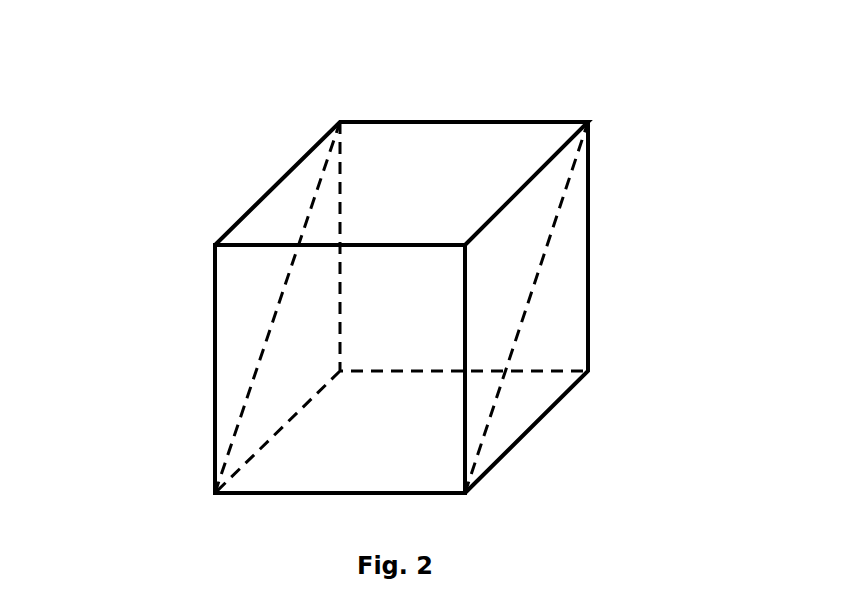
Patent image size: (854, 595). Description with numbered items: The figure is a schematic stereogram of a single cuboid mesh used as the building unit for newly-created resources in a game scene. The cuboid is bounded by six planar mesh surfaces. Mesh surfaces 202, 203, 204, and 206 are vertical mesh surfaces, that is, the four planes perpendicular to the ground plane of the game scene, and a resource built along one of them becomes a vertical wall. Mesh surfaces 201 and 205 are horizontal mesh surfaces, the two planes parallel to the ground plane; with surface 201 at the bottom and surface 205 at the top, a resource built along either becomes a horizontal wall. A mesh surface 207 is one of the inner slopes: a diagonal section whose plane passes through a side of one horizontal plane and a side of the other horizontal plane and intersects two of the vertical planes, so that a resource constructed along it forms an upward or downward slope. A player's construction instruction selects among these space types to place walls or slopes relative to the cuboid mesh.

The horizontal mesh surface 201 is at (340, 369).
The vertical mesh surface 202 is at (401, 307).
The vertical mesh surface 203 is at (526, 307).
The vertical mesh surface 204 is at (401, 183).
The horizontal mesh surface 205 is at (500, 158).
The vertical mesh surface 206 is at (253, 320).
The inner slope 207 is at (525, 252).